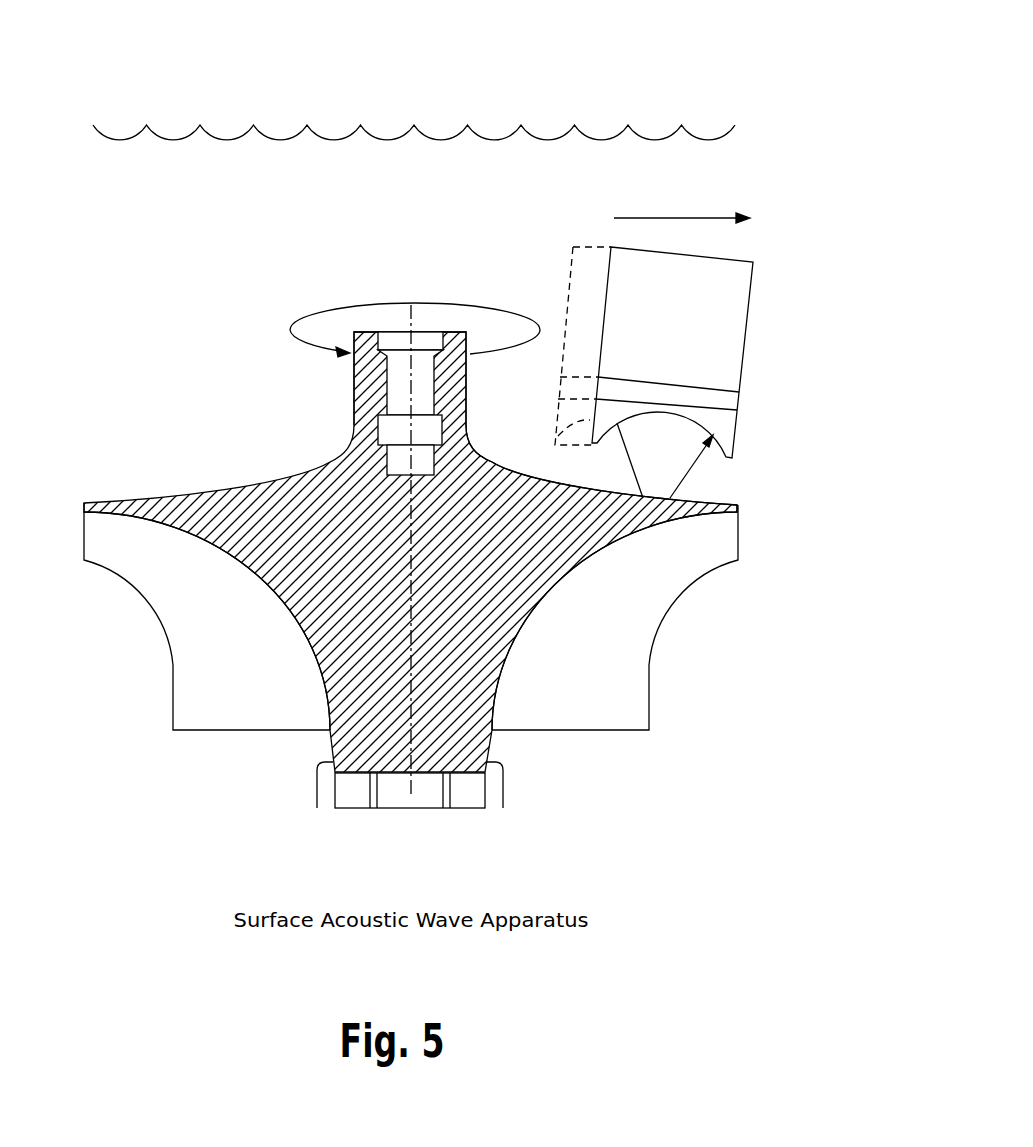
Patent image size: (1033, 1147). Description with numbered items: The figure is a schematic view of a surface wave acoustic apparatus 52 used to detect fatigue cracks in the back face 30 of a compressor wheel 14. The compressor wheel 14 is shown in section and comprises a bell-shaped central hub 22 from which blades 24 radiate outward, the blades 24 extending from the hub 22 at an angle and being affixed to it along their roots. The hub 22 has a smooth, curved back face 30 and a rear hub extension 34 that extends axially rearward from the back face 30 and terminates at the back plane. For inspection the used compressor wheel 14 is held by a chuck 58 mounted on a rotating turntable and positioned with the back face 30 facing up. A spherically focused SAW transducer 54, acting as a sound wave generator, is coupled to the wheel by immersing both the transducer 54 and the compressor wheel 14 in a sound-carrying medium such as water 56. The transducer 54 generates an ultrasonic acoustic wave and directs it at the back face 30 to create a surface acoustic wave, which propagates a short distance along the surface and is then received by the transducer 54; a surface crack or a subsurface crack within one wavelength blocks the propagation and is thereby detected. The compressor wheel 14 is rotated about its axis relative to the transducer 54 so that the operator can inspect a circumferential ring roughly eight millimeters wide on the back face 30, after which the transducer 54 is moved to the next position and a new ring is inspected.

The compressor wheel 14 is at (572, 586).
The central hub 22 is at (515, 662).
The blades 24 is at (157, 615).
The back face 30 is at (157, 500).
The rear hub extension 34 is at (467, 387).
The surface wave acoustic apparatus 52 is at (750, 64).
The SAW transducer 54 is at (750, 297).
The water 56 is at (155, 222).
The chuck 58 is at (503, 788).